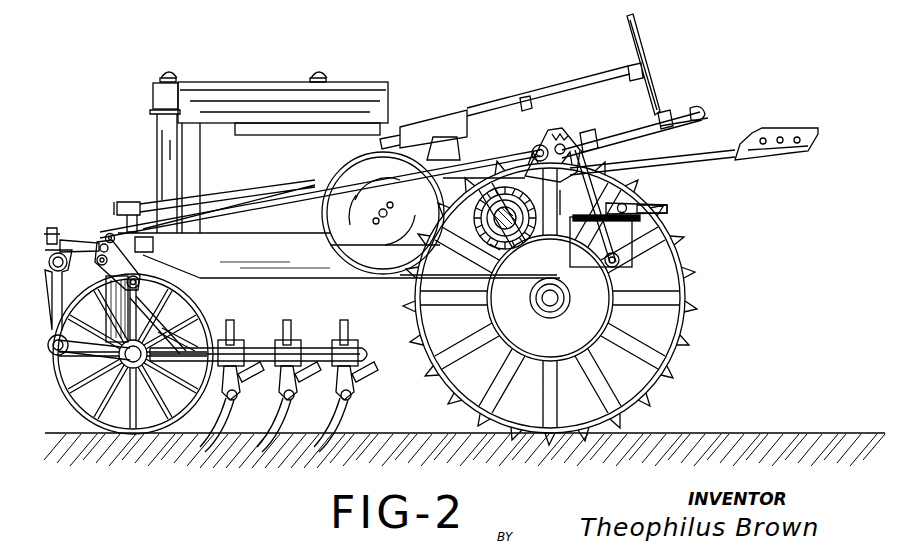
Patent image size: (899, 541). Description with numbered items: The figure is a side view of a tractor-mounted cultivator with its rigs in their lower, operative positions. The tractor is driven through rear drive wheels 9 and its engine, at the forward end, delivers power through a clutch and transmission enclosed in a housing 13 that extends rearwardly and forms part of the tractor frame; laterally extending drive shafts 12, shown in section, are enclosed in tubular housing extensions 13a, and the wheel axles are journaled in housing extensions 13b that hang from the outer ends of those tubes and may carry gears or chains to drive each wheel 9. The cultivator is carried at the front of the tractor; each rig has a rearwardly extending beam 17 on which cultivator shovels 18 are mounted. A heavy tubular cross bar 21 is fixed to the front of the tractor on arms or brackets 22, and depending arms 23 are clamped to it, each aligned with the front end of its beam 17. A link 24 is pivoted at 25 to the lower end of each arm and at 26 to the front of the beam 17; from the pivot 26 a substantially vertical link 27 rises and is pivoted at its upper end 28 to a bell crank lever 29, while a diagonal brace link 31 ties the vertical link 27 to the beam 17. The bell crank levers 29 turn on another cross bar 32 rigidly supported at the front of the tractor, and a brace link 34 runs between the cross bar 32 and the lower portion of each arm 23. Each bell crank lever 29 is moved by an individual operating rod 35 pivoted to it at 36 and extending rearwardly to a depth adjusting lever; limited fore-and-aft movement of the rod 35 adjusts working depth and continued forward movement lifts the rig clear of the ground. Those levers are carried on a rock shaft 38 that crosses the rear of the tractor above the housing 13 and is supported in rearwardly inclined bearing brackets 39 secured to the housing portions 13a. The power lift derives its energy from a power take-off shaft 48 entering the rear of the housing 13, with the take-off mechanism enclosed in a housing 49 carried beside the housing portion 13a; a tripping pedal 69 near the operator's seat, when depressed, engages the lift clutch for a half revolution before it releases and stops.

The rear drive wheels 9 is at (688, 280).
The drive shafts 12 is at (493, 218).
The housing 13 is at (410, 279).
The tubular housing extensions 13a is at (495, 247).
The housing extensions 13b is at (528, 342).
The cultivator beam 17 is at (217, 347).
The cultivator shovels 18 is at (249, 439).
The tubular cross bar 21 is at (72, 238).
The arms or brackets 22 is at (82, 240).
The depending arms 23 is at (53, 290).
The link 24 is at (76, 360).
The pivot 25 is at (55, 356).
The pivotal connection 26 is at (118, 363).
The vertical link 27 is at (148, 322).
The pivot 28 is at (140, 280).
The bell crank lever 29 is at (108, 258).
The diagonal brace link 31 is at (192, 350).
The cross bar 32 is at (117, 264).
The brace link 34 is at (106, 309).
The operating rod 35 is at (240, 210).
The pivot 36 is at (110, 233).
The rock shaft 38 is at (533, 147).
The bearing brackets 39 is at (530, 167).
The power take-off shaft 48 is at (536, 298).
The housing 49 is at (634, 247).
The tripping pedal 69 is at (669, 208).